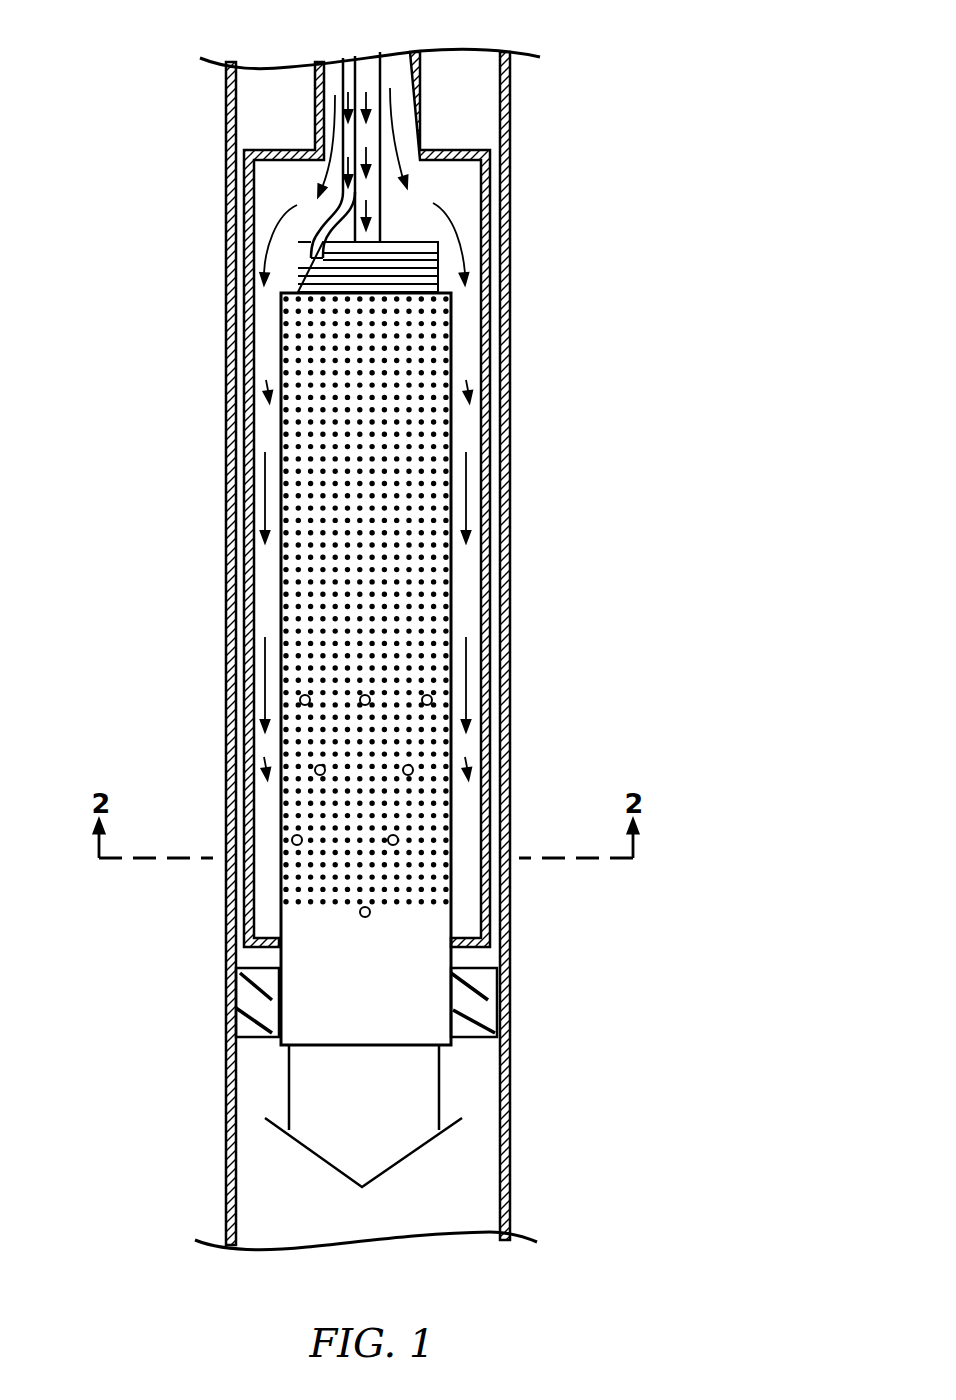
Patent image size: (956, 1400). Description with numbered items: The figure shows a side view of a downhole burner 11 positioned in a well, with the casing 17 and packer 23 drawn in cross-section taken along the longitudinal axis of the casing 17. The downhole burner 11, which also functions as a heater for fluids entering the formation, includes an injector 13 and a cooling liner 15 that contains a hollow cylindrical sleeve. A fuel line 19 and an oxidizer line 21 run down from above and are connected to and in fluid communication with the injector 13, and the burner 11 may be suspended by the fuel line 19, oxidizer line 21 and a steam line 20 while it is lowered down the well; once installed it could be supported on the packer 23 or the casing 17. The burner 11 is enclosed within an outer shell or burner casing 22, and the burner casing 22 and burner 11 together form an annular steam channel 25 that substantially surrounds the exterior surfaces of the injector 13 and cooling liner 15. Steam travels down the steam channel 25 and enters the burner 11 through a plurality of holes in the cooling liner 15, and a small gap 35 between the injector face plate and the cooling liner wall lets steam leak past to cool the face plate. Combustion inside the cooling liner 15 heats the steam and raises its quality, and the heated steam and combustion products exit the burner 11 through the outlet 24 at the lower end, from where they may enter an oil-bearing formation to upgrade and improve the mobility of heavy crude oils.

The downhole burner 11 is at (462, 305).
The injector 13 is at (283, 260).
The cooling liner 15 is at (282, 448).
The casing 17 is at (510, 216).
The fuel line 19 is at (328, 216).
The steam line 20 is at (420, 78).
The oxidizer line 21 is at (367, 132).
The burner casing 22 is at (490, 560).
The packer 23 is at (247, 1000).
The outlet 24 is at (413, 1047).
The annular steam channel 25 is at (263, 613).
The small gap 35 is at (443, 292).